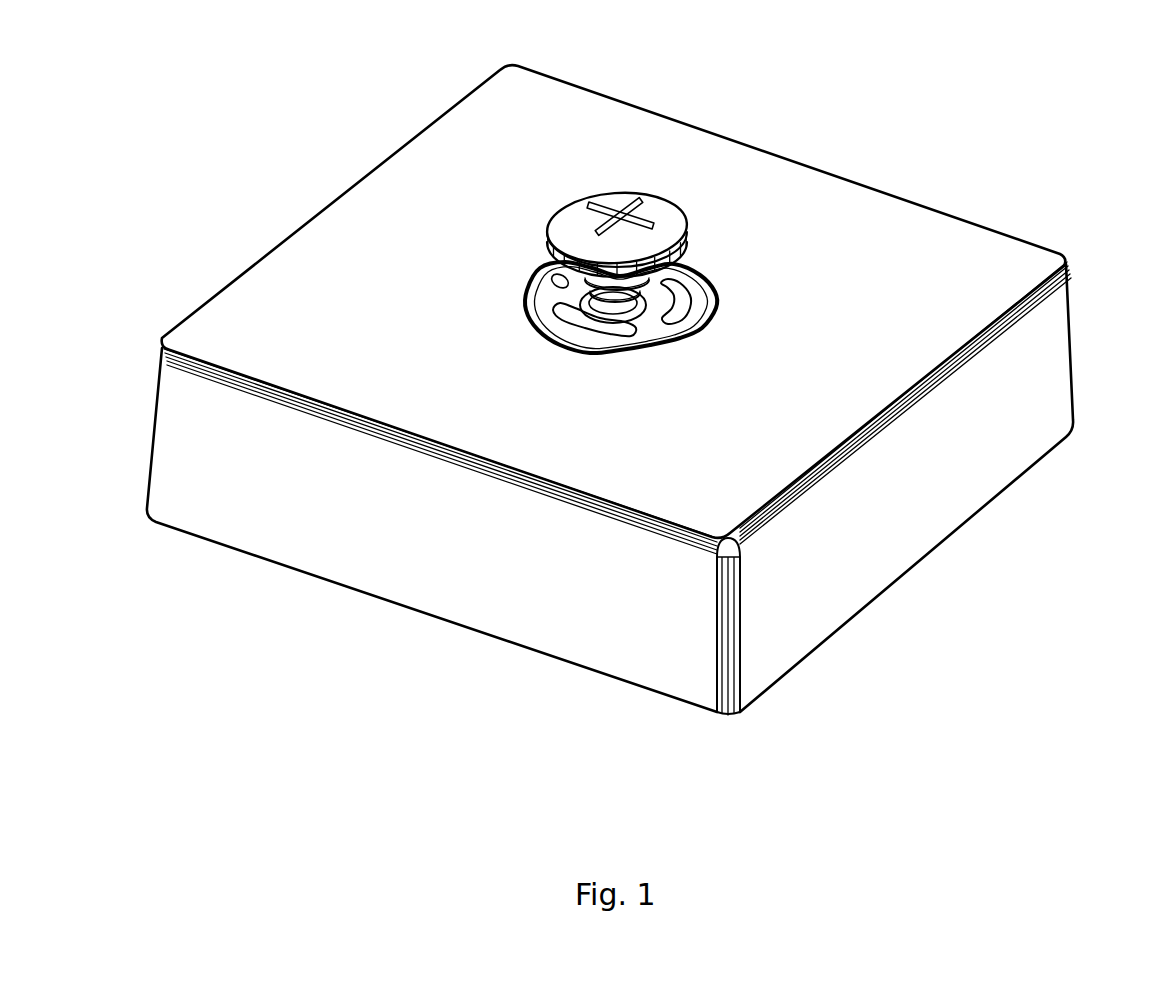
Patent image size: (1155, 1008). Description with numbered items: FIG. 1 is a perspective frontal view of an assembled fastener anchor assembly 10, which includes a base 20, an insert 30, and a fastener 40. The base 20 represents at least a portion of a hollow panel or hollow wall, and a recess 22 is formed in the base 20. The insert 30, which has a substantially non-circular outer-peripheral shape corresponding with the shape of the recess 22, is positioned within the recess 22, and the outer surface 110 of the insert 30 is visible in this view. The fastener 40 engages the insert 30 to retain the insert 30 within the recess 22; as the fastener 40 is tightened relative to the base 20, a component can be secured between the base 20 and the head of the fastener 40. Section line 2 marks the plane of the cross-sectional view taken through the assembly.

The fastener anchor assembly 10 is at (610, 384).
The base 20 is at (268, 557).
The recess 22 is at (637, 351).
The insert 30 is at (692, 302).
The fastener 40 is at (655, 207).
The outer surface 110 is at (547, 283).
The section line 2- 2 is at (348, 168).